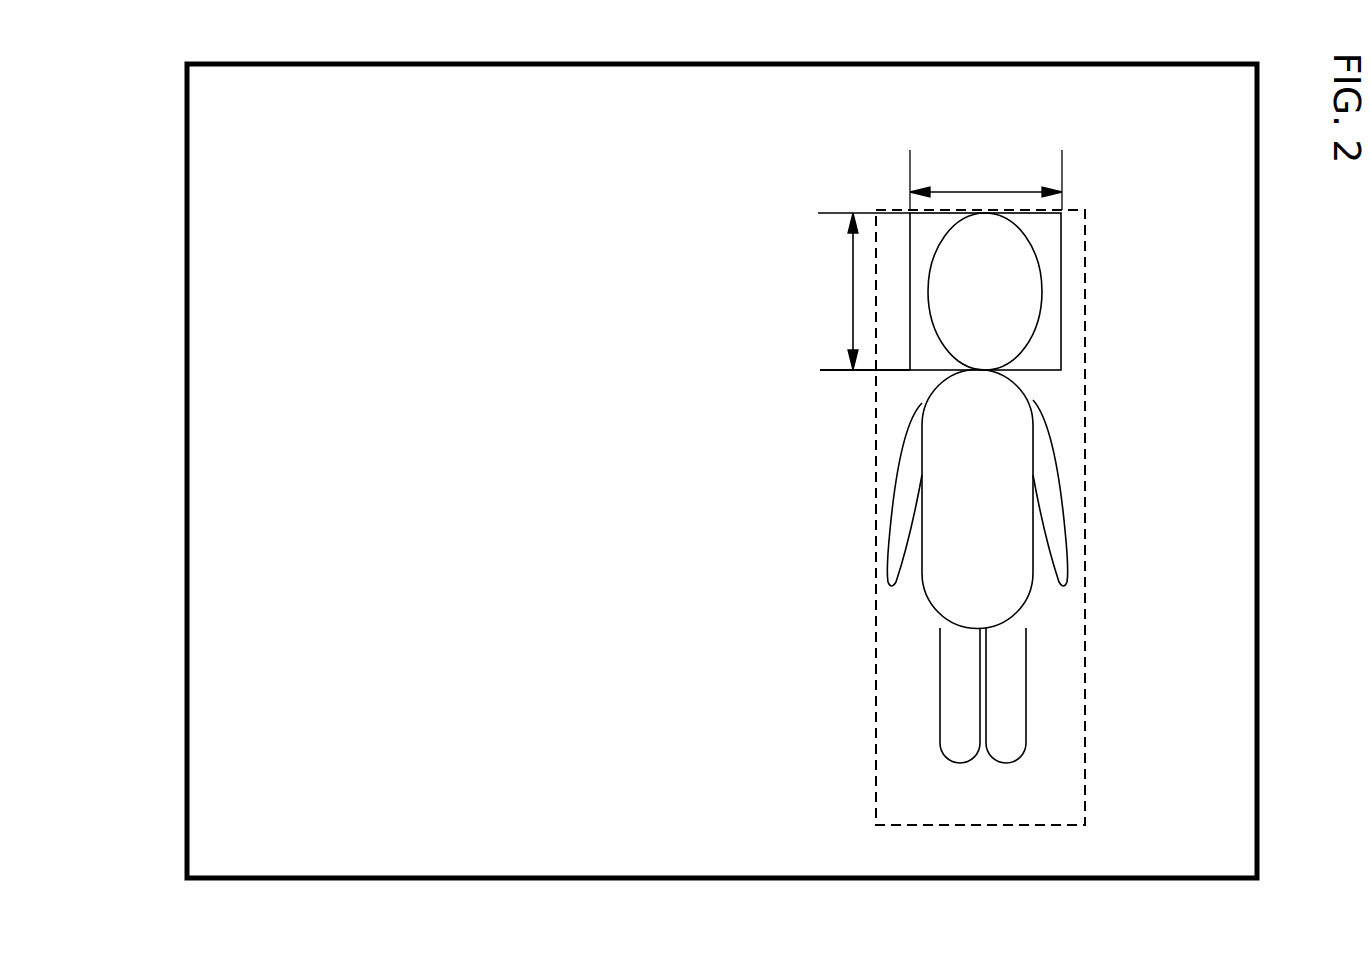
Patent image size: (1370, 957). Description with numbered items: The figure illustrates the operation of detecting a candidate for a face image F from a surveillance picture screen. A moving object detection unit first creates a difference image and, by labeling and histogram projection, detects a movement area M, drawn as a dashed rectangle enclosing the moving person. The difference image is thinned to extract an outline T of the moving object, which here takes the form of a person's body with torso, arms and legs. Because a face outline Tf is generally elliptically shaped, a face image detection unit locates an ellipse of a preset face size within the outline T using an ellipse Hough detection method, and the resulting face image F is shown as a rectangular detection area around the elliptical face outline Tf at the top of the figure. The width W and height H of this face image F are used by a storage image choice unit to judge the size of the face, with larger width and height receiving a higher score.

The movement area M is at (1085, 605).
The face image F is at (1061, 330).
The face outline Tf is at (1039, 285).
The outline of the moving object T is at (1057, 490).
The width of the face image W is at (986, 174).
The height of the face image H is at (856, 291).